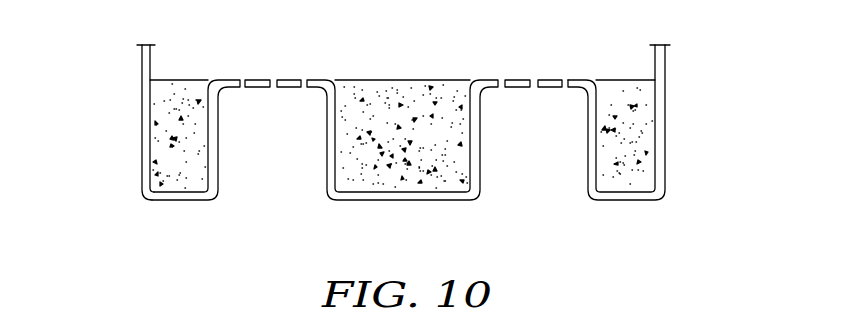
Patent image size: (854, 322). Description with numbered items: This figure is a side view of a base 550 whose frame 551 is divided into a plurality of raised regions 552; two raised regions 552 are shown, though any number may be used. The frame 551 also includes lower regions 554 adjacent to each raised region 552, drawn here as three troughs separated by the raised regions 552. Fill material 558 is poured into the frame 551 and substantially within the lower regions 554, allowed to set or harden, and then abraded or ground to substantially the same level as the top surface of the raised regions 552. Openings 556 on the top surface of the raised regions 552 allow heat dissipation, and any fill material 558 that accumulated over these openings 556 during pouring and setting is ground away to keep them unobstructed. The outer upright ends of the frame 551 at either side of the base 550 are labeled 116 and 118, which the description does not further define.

The first side wall 116 is at (142, 81).
The second side wall 118 is at (665, 90).
The base 550 is at (105, 157).
The frame 551 is at (665, 138).
The raised region 552 is at (282, 125).
The lower region 554 is at (143, 197).
The opening 556 is at (304, 76).
The fill material 558 is at (188, 90).